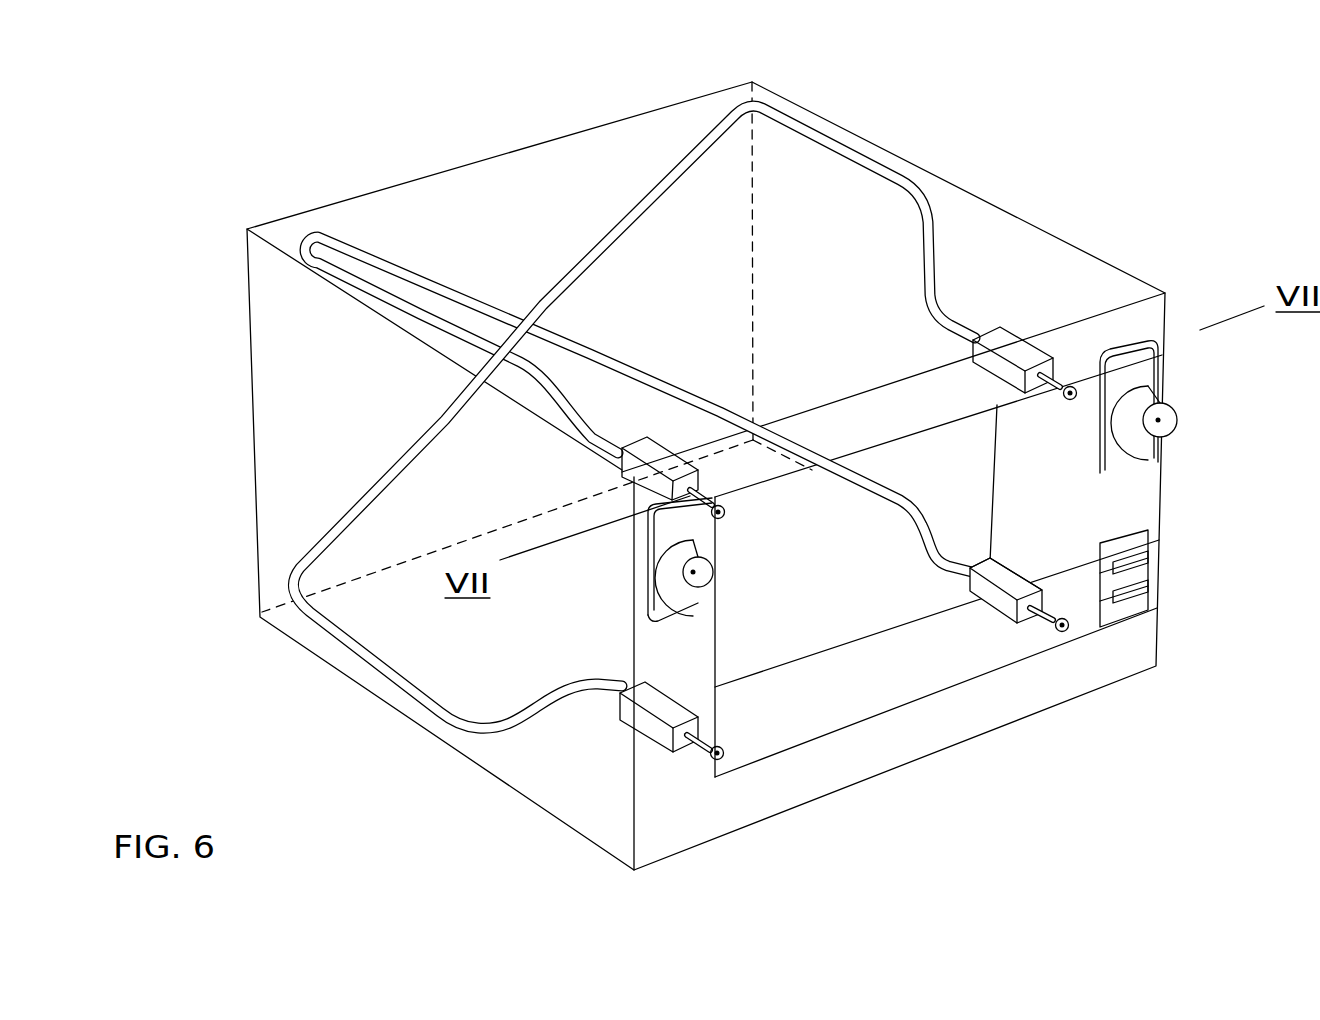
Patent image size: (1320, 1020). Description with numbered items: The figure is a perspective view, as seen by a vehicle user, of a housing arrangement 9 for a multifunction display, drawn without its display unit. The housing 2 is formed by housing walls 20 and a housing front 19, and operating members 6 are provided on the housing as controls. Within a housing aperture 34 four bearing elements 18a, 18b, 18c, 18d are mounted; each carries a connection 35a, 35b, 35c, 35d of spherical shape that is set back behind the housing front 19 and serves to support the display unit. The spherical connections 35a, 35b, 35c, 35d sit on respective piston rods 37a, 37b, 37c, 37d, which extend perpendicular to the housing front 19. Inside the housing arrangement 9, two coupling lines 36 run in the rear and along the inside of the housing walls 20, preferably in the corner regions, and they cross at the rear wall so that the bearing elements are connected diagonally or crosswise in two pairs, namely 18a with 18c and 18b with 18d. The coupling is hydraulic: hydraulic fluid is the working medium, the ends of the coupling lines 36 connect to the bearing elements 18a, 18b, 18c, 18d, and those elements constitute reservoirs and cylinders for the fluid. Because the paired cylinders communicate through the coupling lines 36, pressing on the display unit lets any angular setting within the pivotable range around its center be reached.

The housing 2 is at (550, 778).
The operating member 6 is at (1158, 420).
The housing arrangement 9 is at (992, 158).
The bearing element 18a is at (650, 723).
The bearing element 18b is at (998, 603).
The bearing element 18c is at (1003, 336).
The bearing element 18d is at (685, 483).
The housing front 19 is at (952, 730).
The housing wall 20 is at (476, 190).
The housing aperture 34 is at (780, 722).
The spherical connection 35a is at (720, 758).
The spherical connection 35b is at (1066, 629).
The spherical connection 35c is at (1076, 392).
The spherical connection 35d is at (722, 517).
The coupling line 36 is at (305, 238).
The piston rod 37a is at (700, 744).
The piston rod 37b is at (1043, 621).
The piston rod 37c is at (1055, 385).
The piston rod 37d is at (705, 500).